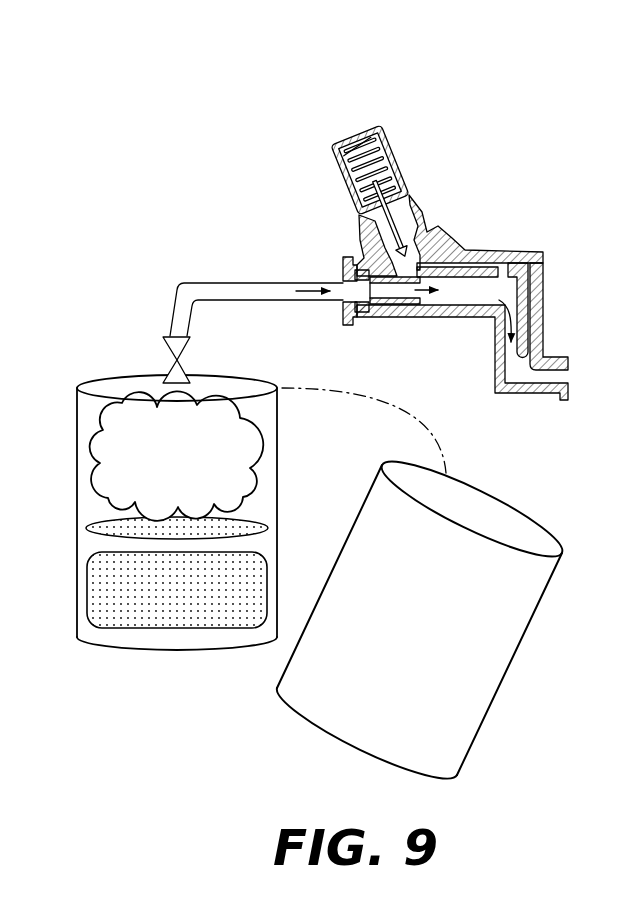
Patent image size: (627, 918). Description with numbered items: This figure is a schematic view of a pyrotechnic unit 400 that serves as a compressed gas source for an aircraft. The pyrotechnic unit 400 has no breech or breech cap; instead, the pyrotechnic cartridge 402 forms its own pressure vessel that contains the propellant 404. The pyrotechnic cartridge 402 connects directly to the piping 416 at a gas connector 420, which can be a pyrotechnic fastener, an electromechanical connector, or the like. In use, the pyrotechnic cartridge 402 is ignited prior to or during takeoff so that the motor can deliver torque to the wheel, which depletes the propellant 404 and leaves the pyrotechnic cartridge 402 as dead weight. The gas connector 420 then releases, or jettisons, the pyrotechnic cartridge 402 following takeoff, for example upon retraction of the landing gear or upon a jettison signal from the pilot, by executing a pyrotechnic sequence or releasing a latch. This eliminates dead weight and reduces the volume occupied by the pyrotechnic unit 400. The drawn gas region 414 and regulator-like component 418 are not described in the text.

The pyrotechnic unit 400 is at (523, 96).
The pyrotechnic cartridge 402 is at (139, 512).
The propellant 404 is at (195, 602).
The gas 414 is at (195, 466).
The piping 416 is at (181, 283).
The pressure regulator 418 is at (392, 143).
The gas connector 420 is at (173, 358).